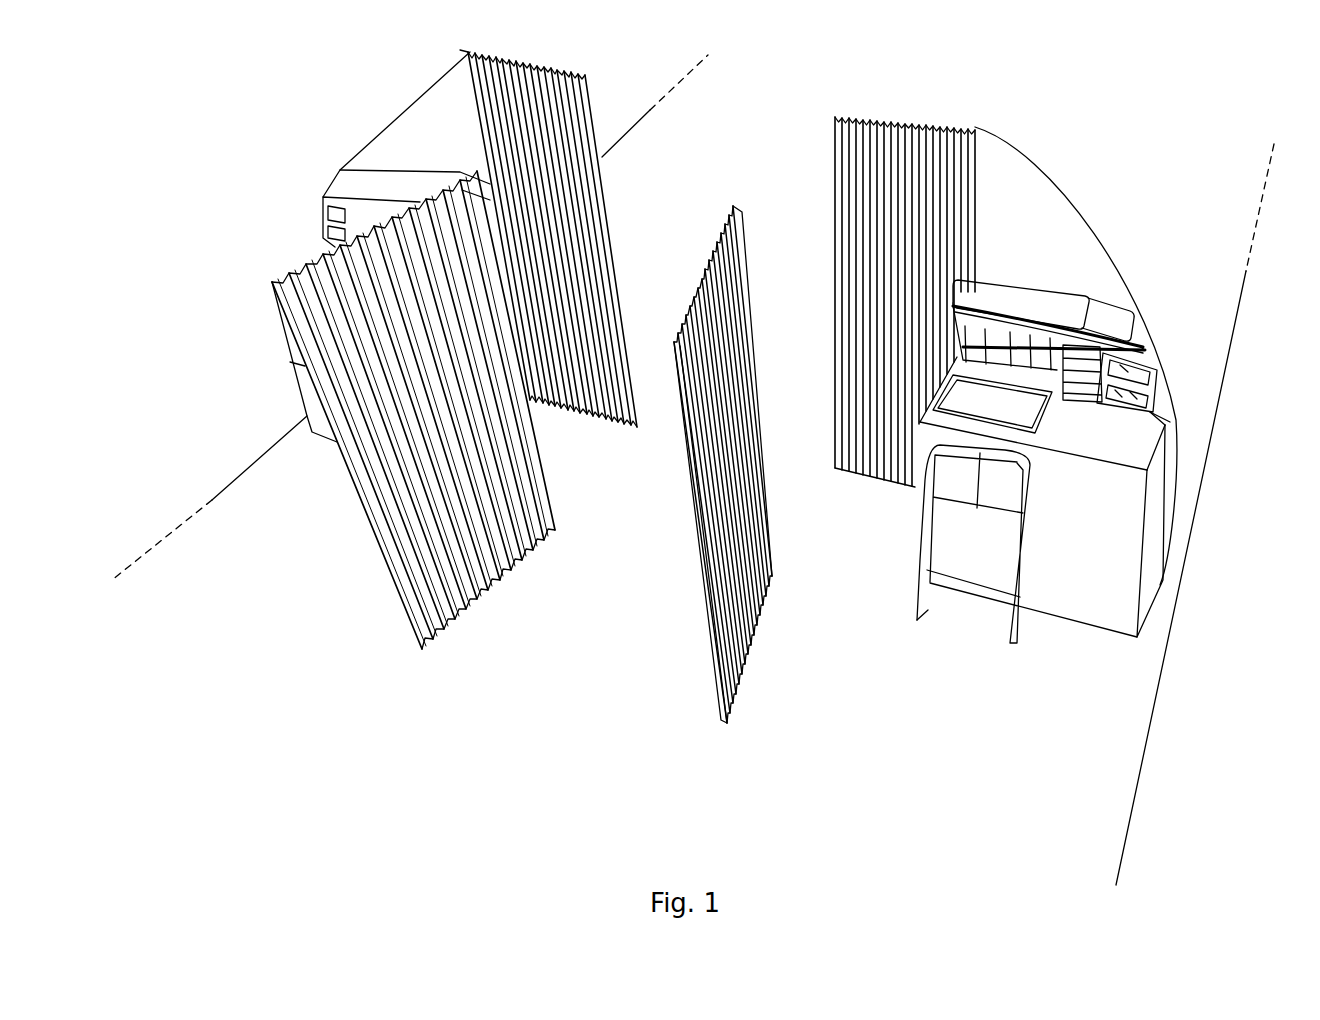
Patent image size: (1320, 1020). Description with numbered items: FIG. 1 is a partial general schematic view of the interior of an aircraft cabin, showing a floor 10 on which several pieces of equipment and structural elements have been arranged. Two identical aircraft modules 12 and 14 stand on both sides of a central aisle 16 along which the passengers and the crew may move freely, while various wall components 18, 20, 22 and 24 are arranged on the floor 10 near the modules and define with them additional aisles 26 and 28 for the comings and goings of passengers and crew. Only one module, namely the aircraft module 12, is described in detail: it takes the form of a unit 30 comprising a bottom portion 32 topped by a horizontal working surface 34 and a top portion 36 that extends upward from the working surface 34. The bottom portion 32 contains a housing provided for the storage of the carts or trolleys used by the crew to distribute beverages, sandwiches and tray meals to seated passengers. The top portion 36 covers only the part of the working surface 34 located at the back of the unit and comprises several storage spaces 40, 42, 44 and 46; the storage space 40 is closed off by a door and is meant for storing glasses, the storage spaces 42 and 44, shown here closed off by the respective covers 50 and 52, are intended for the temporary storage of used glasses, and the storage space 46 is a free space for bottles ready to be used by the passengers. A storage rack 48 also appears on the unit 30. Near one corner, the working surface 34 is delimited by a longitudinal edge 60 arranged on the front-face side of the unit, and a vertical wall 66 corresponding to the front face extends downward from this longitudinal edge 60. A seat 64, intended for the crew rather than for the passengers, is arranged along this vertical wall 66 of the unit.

The floor 10 is at (1232, 282).
The aircraft module 12 is at (1217, 520).
The aircraft module 14 is at (338, 152).
The central aisle 16 is at (600, 548).
The wall component 18 is at (553, 75).
The wall component 20 is at (915, 126).
The wall component 22 is at (468, 192).
The wall component 24 is at (736, 208).
The additional aisle 26 is at (805, 538).
The additional aisle 28 is at (578, 450).
The unit 30 is at (1165, 572).
The bottom portion 32 is at (1108, 609).
The working surface 34 is at (1120, 437).
The top portion 36 is at (1193, 354).
The storage space 40 is at (1185, 398).
The storage space 42 is at (1054, 287).
The storage space 44 is at (1108, 298).
The storage space 46 is at (963, 350).
The storage rack 48 is at (1068, 398).
The cover 50 is at (1015, 294).
The cover 52 is at (1113, 301).
The longitudinal edge 60 is at (937, 410).
The seat 64 is at (970, 545).
The vertical wall 66 is at (1121, 596).